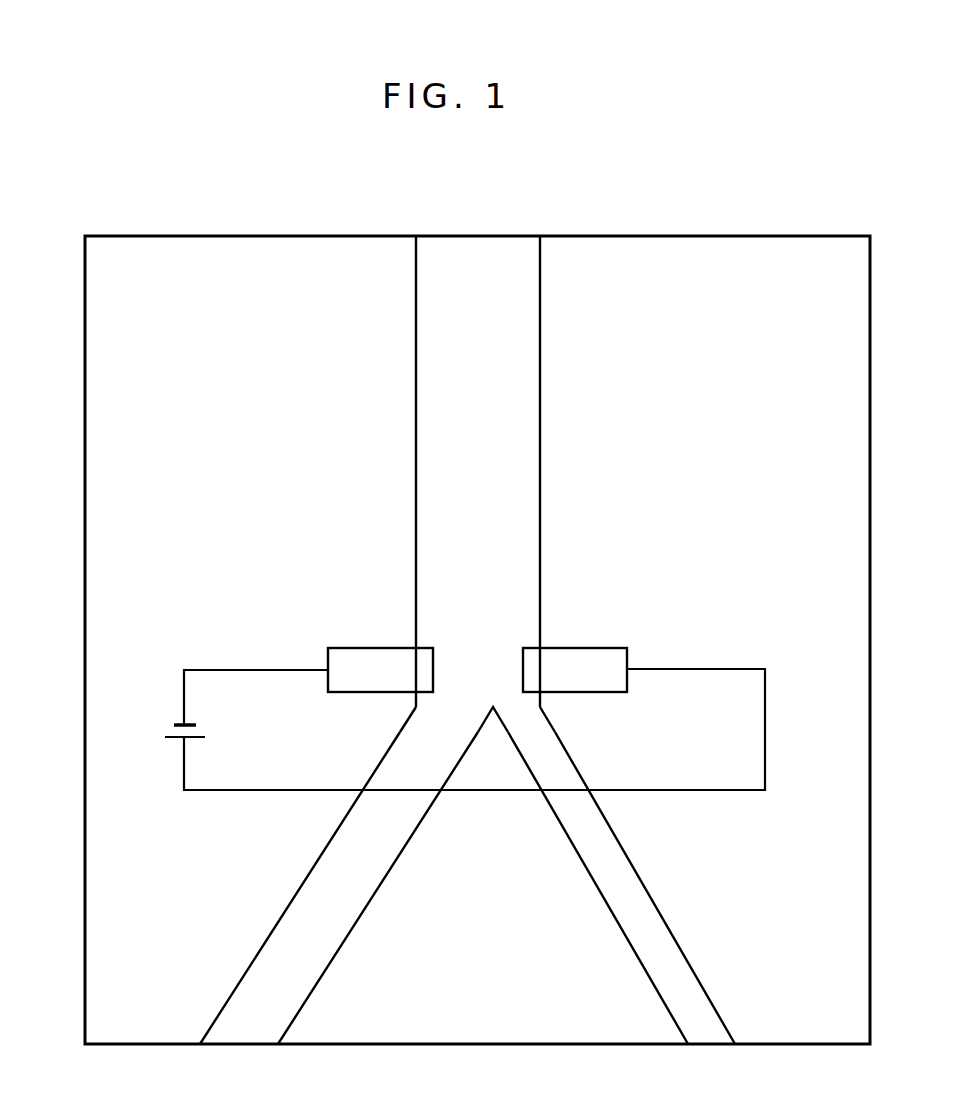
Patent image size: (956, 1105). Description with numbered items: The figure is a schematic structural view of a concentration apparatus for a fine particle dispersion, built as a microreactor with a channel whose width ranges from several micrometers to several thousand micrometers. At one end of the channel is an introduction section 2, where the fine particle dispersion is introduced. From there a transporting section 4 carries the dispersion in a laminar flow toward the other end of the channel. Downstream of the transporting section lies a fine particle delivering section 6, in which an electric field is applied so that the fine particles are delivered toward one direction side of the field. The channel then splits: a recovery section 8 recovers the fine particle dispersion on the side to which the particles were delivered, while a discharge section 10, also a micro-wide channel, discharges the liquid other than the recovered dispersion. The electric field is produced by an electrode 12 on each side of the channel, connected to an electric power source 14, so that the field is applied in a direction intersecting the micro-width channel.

The introduction section 2 is at (418, 255).
The transporting section 4 is at (428, 443).
The fine particle delivering section 6 is at (487, 662).
The recovery section 8 is at (659, 940).
The discharge section 10 is at (322, 898).
The electrode 12 is at (354, 655).
The electric power source 14 is at (170, 736).